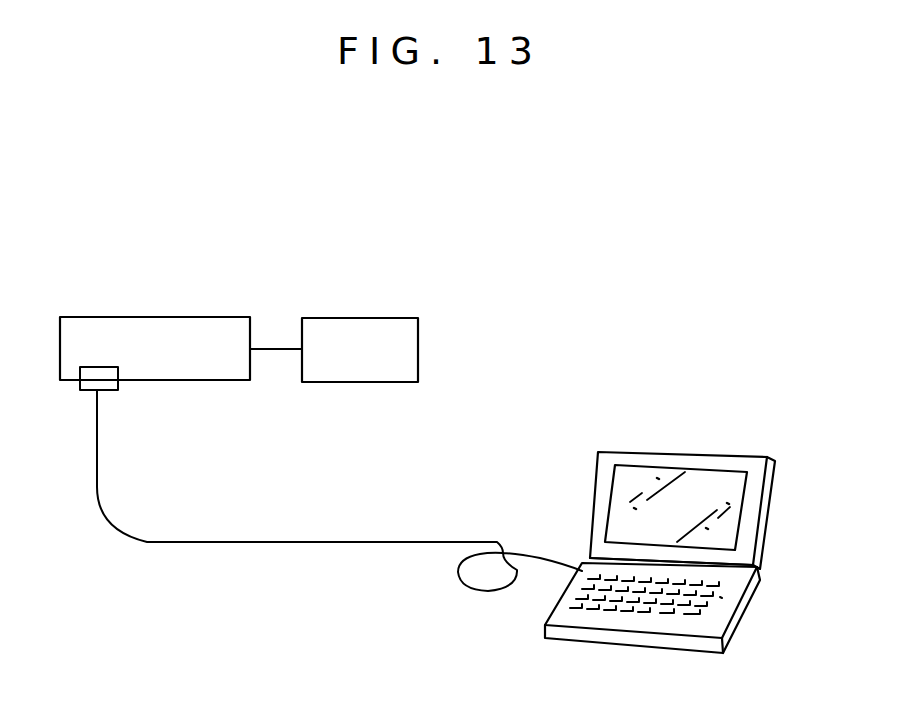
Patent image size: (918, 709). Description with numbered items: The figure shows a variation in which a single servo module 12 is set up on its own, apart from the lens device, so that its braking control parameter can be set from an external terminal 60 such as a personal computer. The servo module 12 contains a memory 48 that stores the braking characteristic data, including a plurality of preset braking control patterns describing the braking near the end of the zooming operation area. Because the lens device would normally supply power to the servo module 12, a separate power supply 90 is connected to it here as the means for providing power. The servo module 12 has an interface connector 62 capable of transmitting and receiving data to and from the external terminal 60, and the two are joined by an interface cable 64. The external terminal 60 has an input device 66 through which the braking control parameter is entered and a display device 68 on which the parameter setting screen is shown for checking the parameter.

The servo module 12 is at (70, 325).
The memory 48 is at (168, 325).
The power supply 90 is at (344, 318).
The interface connector 62 is at (80, 377).
The interface cable 64 is at (243, 542).
The external terminal 60 is at (776, 504).
The display device 68 is at (637, 465).
The input device 66 is at (603, 590).